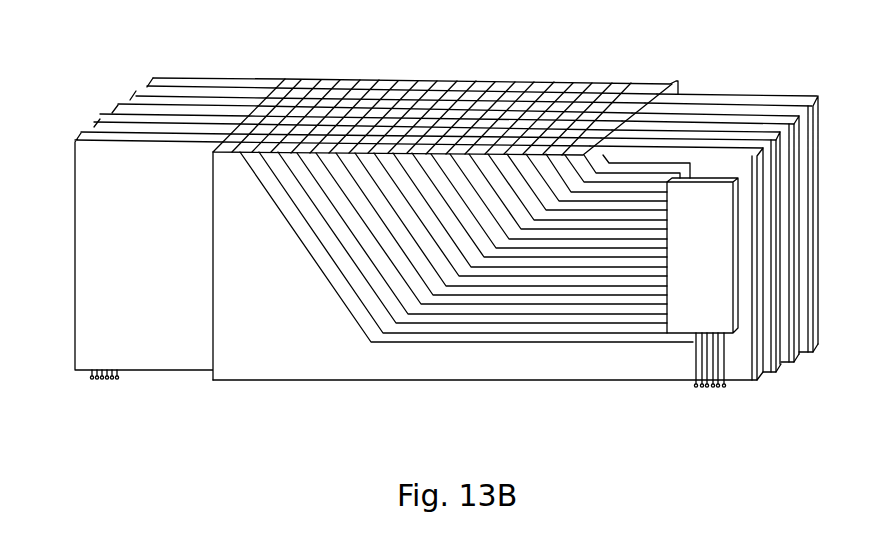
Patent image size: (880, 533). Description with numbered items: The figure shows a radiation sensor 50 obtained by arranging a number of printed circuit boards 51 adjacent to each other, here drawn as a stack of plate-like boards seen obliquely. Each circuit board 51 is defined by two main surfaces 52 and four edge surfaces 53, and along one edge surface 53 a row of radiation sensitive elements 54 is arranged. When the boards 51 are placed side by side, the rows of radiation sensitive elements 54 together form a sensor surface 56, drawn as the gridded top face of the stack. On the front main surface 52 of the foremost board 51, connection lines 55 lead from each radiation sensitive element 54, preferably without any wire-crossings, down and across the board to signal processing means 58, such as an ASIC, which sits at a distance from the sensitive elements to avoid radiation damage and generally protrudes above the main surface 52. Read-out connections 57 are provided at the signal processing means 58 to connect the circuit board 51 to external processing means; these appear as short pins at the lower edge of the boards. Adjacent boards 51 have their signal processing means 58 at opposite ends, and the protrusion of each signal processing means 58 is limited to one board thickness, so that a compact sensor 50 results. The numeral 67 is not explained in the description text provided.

The radiation sensor 50 is at (733, 39).
The circuit board 51 is at (110, 104).
The main surface 52 is at (75, 231).
The edge surface 53 is at (205, 78).
The radiation sensitive element 54 is at (573, 82).
The connection line 55 is at (340, 300).
The sensor surface 56 is at (358, 86).
The read-out connection 57 is at (90, 373).
The signal processing means 58 is at (714, 263).
The connection pins 67 is at (690, 383).